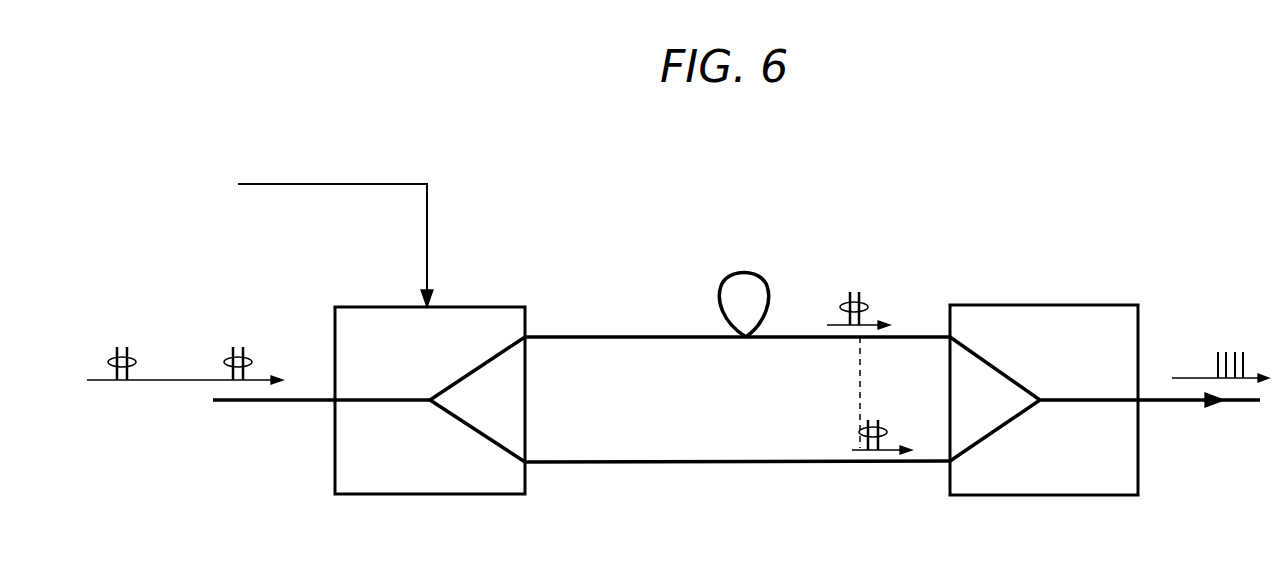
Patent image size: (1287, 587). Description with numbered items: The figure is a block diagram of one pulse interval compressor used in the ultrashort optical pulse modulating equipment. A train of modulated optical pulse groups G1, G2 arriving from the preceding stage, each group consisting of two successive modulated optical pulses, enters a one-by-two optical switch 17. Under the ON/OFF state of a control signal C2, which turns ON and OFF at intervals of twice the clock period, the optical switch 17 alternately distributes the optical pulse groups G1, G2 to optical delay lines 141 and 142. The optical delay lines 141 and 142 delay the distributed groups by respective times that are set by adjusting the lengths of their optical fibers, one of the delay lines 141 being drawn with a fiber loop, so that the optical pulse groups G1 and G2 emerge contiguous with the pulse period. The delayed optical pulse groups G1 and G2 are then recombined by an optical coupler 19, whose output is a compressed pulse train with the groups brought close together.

The 1×2 optical switch 17 is at (507, 304).
The optical coupler 19 is at (1118, 305).
The optical delay line 141 is at (721, 299).
The optical delay line 142 is at (727, 461).
The optical pulse group G1 is at (871, 280).
The optical pulse group G2 is at (898, 403).
The control signal C2 is at (442, 213).